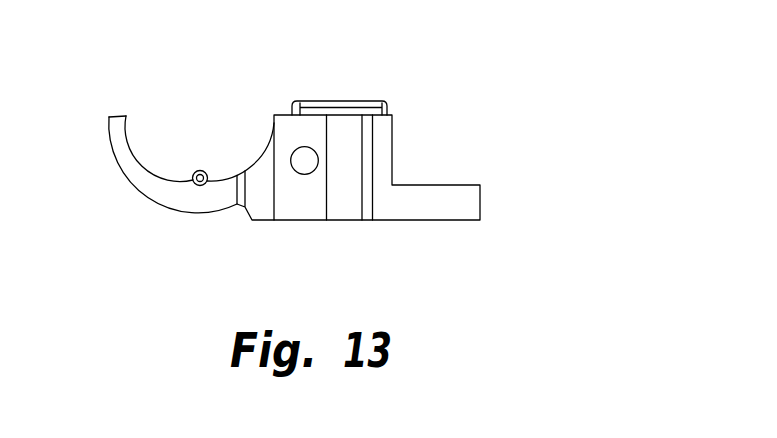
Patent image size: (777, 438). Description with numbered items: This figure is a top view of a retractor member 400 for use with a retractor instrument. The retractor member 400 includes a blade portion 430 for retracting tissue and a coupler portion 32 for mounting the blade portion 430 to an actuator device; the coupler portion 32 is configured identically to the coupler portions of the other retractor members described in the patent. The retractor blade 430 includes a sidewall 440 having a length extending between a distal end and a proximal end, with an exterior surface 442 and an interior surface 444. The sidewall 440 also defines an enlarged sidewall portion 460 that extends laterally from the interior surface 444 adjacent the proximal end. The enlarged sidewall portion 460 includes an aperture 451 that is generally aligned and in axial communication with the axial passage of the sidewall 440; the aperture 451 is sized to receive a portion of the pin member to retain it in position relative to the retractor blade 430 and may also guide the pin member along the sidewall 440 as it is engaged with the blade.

The retractor member 400 is at (430, 56).
The coupler portion 32 is at (333, 232).
The blade portion 430 is at (178, 128).
The sidewall 440 is at (134, 180).
The exterior surface 442 is at (154, 201).
The interior surface 444 is at (143, 129).
The enlarged sidewall portion 460 is at (219, 159).
The aperture 451 is at (199, 180).